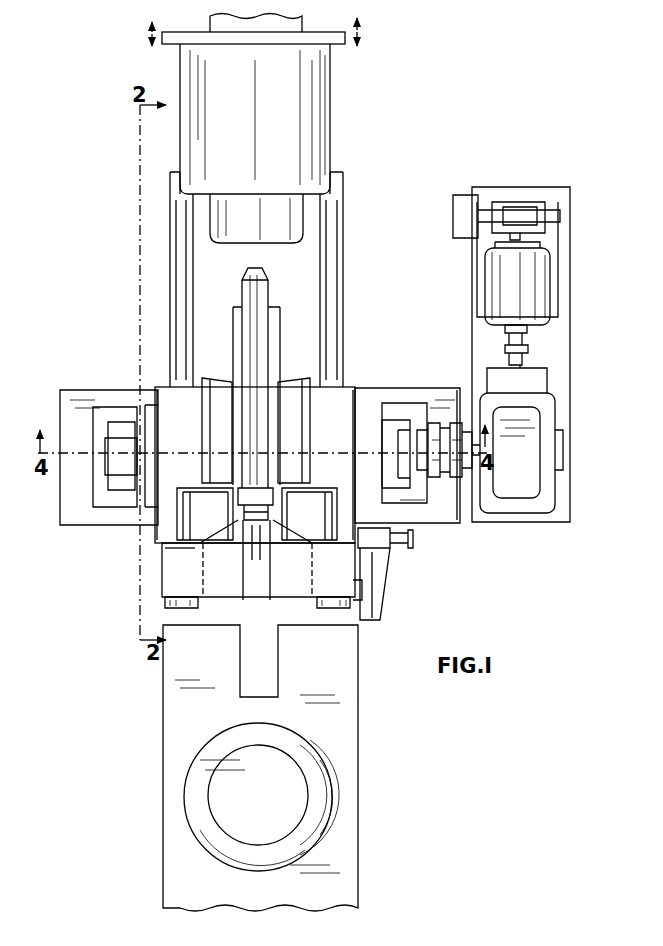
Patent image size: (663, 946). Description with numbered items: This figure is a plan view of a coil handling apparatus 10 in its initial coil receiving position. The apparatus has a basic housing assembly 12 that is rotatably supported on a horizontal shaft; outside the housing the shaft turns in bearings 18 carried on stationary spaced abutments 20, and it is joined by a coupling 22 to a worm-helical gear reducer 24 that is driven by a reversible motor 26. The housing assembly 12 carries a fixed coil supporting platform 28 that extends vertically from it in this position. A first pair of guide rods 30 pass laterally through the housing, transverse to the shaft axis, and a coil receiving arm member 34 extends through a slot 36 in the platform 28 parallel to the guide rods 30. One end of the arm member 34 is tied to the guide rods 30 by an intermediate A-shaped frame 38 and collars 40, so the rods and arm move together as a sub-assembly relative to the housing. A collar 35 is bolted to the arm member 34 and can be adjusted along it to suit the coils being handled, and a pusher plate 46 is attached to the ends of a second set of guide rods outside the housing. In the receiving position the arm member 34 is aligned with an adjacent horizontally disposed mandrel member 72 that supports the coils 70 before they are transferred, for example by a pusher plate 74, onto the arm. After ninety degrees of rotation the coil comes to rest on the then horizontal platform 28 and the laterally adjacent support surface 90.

The coil handling apparatus 10 is at (135, 540).
The housing assembly 12 is at (345, 398).
The bearings 18 is at (110, 462).
The stationary spaced abutments 20 is at (100, 495).
The coupling 22 is at (470, 430).
The worm-helical gear reducer 24 is at (525, 490).
The reversible motor 26 is at (540, 275).
The coil supporting platform 28 is at (198, 503).
The guide rods 30 is at (183, 258).
The coil receiving arm member 34 is at (258, 298).
The collar 35 is at (230, 520).
The slot 36 is at (272, 520).
The A-shaped frame 38 is at (232, 588).
The collars 40 is at (180, 588).
The pusher plate 46 is at (218, 390).
The coils 70 is at (332, 102).
The mandrel member 72 is at (303, 214).
The pusher plate 74 is at (335, 42).
The support surface 90 is at (345, 708).